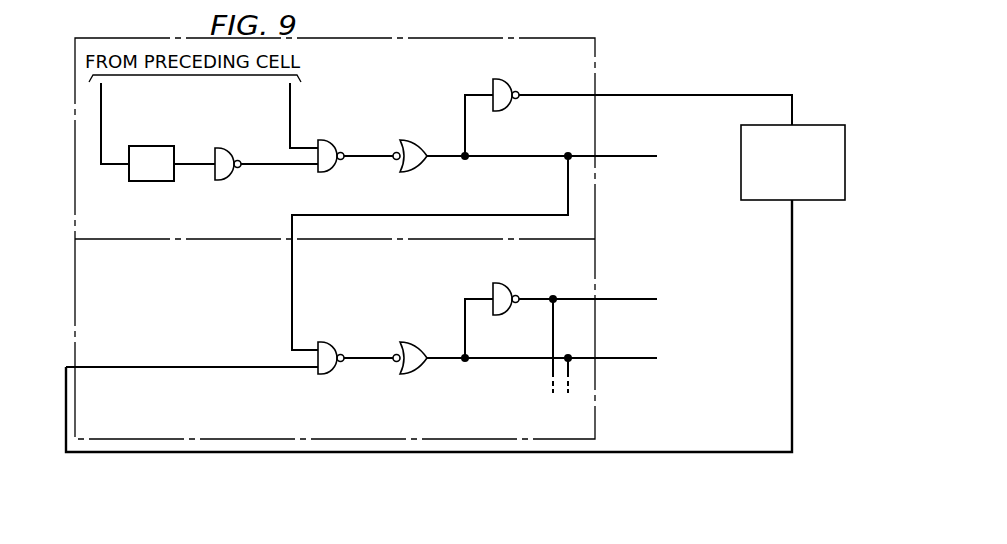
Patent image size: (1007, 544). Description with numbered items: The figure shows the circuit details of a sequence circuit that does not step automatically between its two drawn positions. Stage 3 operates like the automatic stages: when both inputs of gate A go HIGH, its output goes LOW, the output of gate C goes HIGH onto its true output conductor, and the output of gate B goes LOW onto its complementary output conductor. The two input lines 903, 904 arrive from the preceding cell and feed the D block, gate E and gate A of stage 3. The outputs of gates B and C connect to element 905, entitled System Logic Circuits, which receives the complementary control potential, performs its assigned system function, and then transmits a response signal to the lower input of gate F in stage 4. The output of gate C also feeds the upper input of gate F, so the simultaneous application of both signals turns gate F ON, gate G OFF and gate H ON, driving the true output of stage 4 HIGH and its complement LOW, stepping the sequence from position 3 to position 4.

The stage 3 is at (77, 168).
The stage 4 is at (77, 310).
The input line from preceding cell 903 is at (290, 108).
The input line from preceding cell 904 is at (101, 108).
The system logic circuits 905 is at (812, 125).